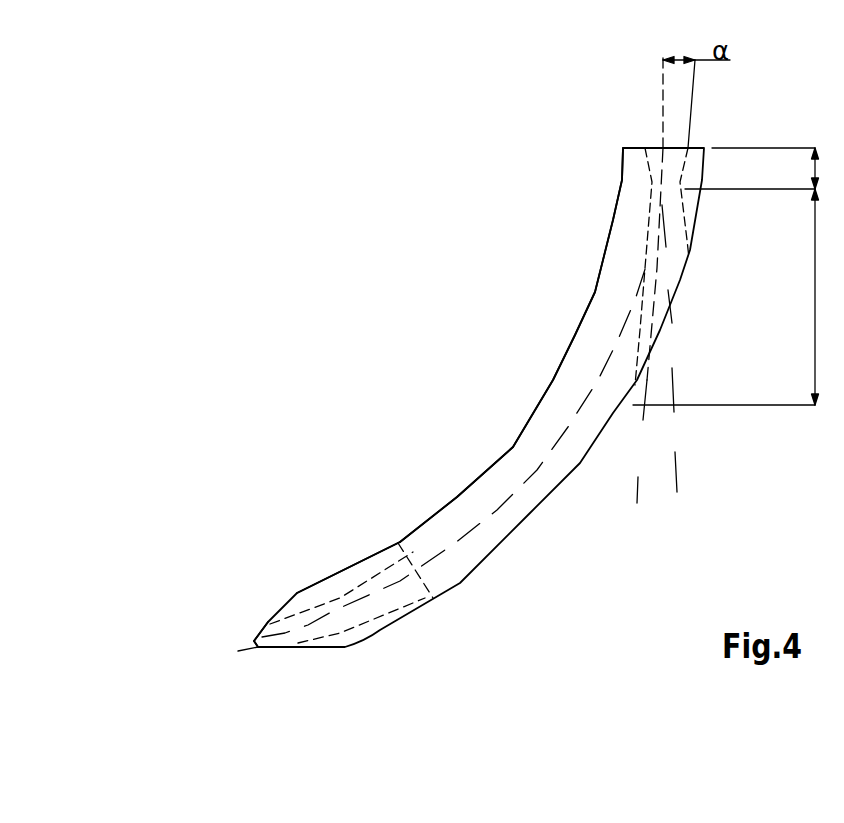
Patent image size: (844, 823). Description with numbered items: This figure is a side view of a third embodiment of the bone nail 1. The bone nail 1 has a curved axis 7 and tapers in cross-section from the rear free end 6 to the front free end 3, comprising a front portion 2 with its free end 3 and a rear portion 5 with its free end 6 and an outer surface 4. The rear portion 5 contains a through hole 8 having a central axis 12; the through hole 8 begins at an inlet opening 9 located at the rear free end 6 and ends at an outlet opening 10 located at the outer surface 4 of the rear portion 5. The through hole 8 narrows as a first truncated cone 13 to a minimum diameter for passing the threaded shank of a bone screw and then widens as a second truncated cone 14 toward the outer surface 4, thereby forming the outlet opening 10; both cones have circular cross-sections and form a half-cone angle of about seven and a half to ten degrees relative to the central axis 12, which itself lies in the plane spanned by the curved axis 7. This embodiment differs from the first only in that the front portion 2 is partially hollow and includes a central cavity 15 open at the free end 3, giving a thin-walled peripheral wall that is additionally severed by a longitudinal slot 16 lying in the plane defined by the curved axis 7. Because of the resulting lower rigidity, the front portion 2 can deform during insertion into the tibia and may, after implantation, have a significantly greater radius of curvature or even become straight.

The bone nail 1 is at (528, 358).
The front portion 2 is at (342, 573).
The free end 3 is at (255, 637).
The outer surface 4 is at (457, 497).
The rear portion 5 is at (595, 292).
The free end 6 is at (672, 143).
The curved axis 7 is at (528, 472).
The through hole 8 is at (675, 238).
The inlet opening 9 is at (653, 160).
The outlet opening 10 is at (672, 315).
The central axis 12 is at (675, 433).
The first truncated cone 13 is at (752, 168).
The second truncated cone 14 is at (726, 297).
The central cavity 15 is at (332, 625).
The slot 16 is at (410, 605).